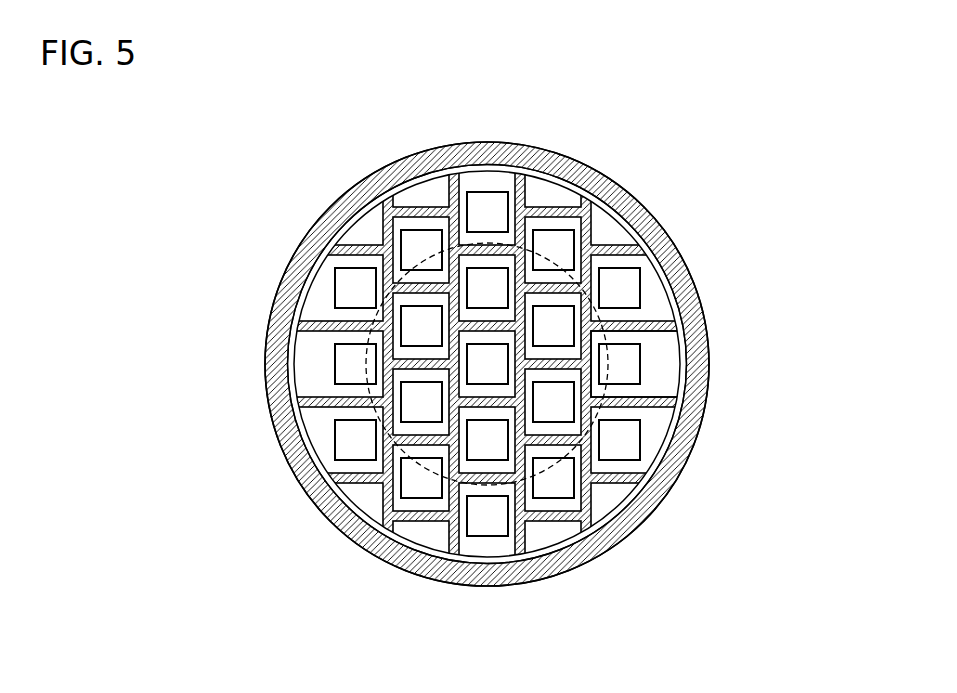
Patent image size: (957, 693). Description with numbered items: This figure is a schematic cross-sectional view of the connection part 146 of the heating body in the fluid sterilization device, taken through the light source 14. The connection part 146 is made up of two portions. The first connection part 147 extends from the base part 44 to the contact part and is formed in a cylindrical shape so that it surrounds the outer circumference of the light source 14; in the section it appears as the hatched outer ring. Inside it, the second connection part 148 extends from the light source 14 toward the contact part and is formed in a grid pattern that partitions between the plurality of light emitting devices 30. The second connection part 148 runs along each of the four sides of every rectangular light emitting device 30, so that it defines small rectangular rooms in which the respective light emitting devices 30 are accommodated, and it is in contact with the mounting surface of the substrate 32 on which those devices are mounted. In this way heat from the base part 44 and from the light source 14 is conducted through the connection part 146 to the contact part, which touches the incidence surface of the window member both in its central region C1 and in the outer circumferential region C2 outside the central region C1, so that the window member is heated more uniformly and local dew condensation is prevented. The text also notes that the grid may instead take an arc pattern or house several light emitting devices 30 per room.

The connection part 146 is at (468, 344).
The first connection part 147 is at (625, 196).
The second connection part 148 is at (617, 230).
The base part 44 is at (653, 266).
The light source 14 is at (468, 365).
The substrate 32 is at (318, 265).
The light emitting devices 30 is at (338, 293).
The central region C1 is at (598, 389).
The outer circumferential region C2 is at (665, 352).